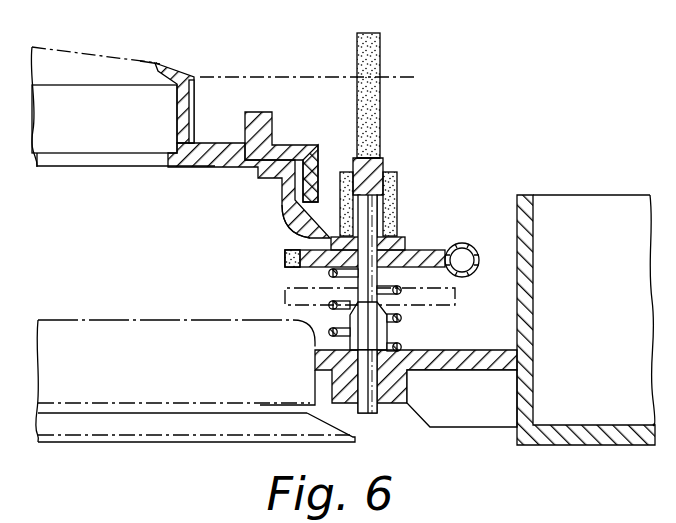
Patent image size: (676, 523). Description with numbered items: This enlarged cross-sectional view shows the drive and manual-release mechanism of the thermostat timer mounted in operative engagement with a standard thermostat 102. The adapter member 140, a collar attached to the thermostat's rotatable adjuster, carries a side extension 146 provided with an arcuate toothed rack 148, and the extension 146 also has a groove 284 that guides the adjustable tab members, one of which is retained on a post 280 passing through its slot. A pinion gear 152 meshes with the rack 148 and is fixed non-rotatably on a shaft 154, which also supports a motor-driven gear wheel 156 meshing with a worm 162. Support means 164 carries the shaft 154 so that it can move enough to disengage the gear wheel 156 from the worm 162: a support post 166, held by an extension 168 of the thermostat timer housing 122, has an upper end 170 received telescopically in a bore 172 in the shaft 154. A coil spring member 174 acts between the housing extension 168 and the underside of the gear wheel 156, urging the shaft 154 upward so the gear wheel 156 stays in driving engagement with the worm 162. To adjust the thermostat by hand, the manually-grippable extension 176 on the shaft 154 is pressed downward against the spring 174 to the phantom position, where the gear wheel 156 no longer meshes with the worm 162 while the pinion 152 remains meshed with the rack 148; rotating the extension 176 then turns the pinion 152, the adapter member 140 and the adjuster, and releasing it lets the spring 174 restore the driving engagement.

The thermostat 102 is at (185, 395).
The thermostat timer housing 122 is at (527, 288).
The adapter member 140 is at (188, 77).
The side extension 146 is at (208, 174).
The toothed rack 148 is at (307, 236).
The pinion gear 152 is at (397, 172).
The shaft 154 is at (373, 121).
The gear wheel 156 is at (435, 256).
The worm 162 is at (480, 262).
The support means 164 is at (280, 298).
The support post 166 is at (402, 292).
The housing extension 168 is at (473, 358).
The upper end 170 is at (380, 242).
The bore 172 is at (385, 200).
The coil spring member 174 is at (335, 275).
The manually-grippable extension 176 is at (370, 53).
The post 280 is at (263, 113).
The groove 284 is at (280, 146).